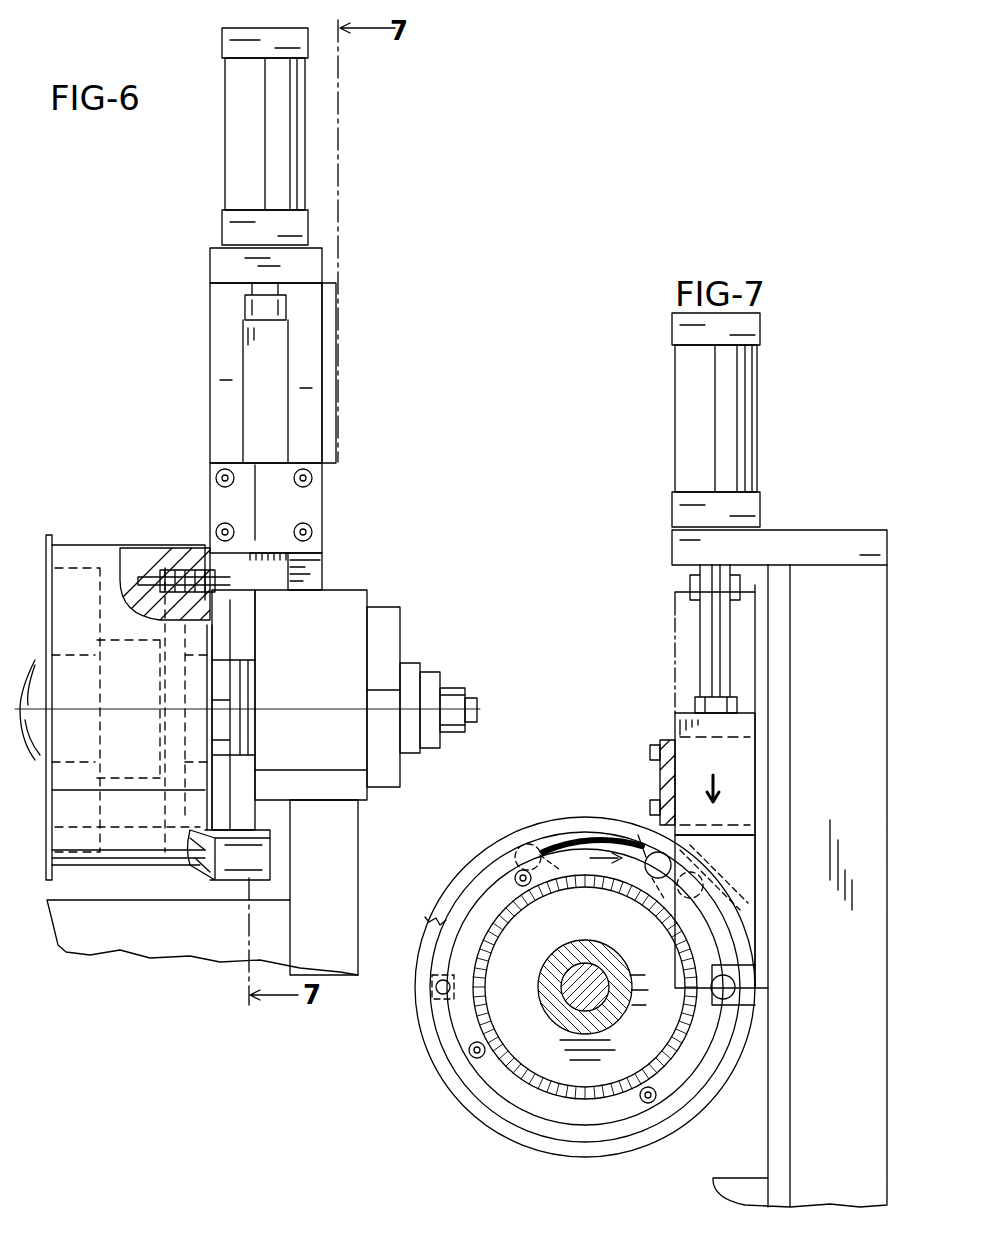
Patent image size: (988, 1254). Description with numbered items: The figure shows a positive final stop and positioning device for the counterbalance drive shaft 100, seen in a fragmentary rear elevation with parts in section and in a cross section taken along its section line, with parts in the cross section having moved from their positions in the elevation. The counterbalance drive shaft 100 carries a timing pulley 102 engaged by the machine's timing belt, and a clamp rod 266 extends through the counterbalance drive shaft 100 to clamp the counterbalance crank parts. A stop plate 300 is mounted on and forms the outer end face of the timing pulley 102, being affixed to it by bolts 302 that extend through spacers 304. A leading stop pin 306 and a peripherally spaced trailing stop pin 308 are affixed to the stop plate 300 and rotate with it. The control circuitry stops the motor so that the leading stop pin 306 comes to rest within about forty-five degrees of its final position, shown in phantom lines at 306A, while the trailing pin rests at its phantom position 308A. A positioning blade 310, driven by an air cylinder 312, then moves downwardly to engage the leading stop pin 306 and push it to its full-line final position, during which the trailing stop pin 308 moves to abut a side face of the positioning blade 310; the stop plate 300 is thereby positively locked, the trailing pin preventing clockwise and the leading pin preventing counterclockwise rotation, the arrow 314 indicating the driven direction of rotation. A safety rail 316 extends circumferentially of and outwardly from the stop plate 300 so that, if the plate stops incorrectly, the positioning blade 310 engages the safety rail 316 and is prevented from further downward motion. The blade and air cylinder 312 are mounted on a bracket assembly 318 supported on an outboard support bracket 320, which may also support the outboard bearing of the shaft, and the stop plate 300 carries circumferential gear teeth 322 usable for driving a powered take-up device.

In FIG. 6, the counterbalance drive shaft 100 is at (32, 672).
In FIG. 7, the counterbalance drive shaft 100 is at (574, 950).
In FIG. 6, the timing pulley 102 is at (48, 538).
In FIG. 7, the timing pulley 102 is at (510, 1060).
In FIG. 6, the clamp rod 266 is at (455, 700).
In FIG. 7, the clamp rod 266 is at (562, 985).
In FIG. 6, the stop plate 300 is at (250, 610).
In FIG. 7, the stop plate 300 is at (440, 966).
In FIG. 6, the bolts 302 is at (186, 572).
In FIG. 7, the bolts 302 is at (670, 780).
In FIG. 6, the spacers 304 is at (162, 560).
In FIG. 6, the leading stop pin 306 is at (265, 858).
In FIG. 7, the leading stop pin 306 is at (712, 985).
In FIG. 7, the initial stop position of leading stop pin 306A is at (702, 880).
In FIG. 7, the trailing stop pin 308 is at (650, 878).
In FIG. 7, the initial position of trailing stop pin 308A is at (524, 842).
In FIG. 6, the positioning blade 310 is at (282, 374).
In FIG. 7, the positioning blade 310 is at (750, 771).
In FIG. 6, the air cylinder 312 is at (228, 155).
In FIG. 7, the air cylinder 312 is at (690, 413).
In FIG. 7, the arrow 314 is at (600, 852).
In FIG. 6, the safety rail 316 is at (252, 552).
In FIG. 7, the safety rail 316 is at (462, 1082).
In FIG. 6, the bracket assembly 318 is at (214, 266).
In FIG. 7, the bracket assembly 318 is at (818, 534).
In FIG. 6, the outboard support bracket 320 is at (152, 941).
In FIG. 7, the circumferential gear teeth 322 is at (428, 928).